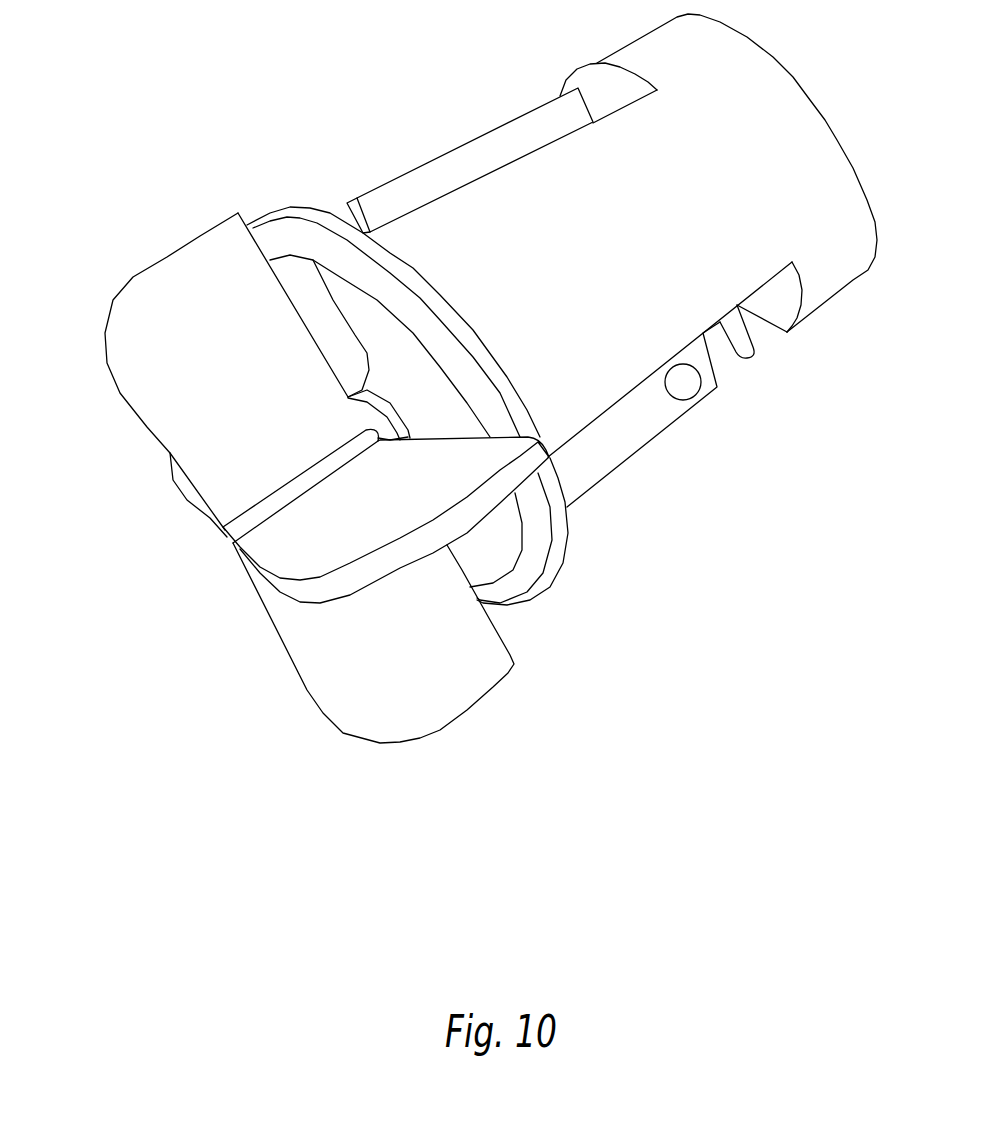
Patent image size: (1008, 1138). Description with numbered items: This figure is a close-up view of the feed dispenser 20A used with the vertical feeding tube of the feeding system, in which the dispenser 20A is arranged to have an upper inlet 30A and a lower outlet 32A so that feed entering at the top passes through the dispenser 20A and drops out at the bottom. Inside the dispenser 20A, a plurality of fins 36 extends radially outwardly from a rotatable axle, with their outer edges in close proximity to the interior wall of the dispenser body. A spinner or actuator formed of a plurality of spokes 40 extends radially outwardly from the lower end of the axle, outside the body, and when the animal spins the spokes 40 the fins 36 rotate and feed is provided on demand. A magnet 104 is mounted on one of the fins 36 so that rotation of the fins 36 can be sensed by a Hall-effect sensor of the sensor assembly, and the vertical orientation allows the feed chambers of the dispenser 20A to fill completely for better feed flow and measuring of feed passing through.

The dispenser 20A is at (638, 43).
The upper inlet 30A is at (468, 183).
The lower outlet 32A is at (720, 343).
The magnet 104 is at (687, 390).
The fin 36 is at (623, 443).
The spoke 40 is at (133, 317).